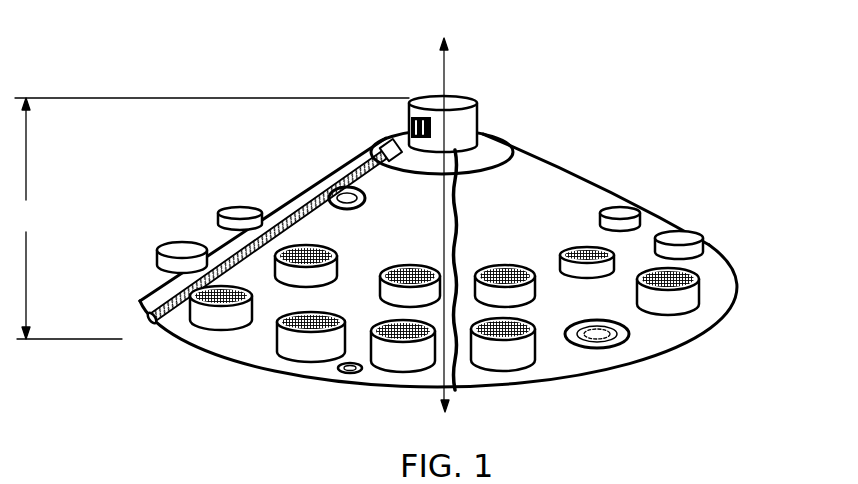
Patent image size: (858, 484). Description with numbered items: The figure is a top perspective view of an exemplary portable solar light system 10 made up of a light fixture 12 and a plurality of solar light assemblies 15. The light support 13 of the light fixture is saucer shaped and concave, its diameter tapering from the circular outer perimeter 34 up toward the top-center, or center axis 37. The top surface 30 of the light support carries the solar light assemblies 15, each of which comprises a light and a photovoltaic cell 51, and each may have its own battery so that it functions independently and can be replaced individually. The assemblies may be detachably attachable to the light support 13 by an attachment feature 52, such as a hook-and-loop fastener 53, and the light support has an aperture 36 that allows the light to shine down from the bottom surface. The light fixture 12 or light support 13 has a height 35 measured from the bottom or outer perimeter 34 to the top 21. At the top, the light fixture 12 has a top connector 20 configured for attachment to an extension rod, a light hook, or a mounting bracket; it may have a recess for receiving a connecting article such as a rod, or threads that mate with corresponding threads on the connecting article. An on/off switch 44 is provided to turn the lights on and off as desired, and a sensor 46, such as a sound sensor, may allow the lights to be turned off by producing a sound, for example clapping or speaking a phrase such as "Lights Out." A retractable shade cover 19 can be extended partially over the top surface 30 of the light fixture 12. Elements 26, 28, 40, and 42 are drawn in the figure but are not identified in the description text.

The portable solar light system 10 is at (340, 84).
The light fixture 12 is at (532, 193).
The light support 13 is at (563, 203).
The solar light assemblies 15 is at (679, 306).
The retractable shade cover 19 is at (290, 210).
The top connector 20 is at (479, 101).
The top 21 is at (412, 96).
The stem 26 is at (477, 170).
The drain hole 28 is at (350, 372).
The top surface 30 is at (643, 233).
The outer perimeter 34 is at (722, 260).
The height 35 is at (212, 218).
The aperture 36 is at (602, 338).
The center axis 37 is at (447, 67).
The small nozzle 40 is at (587, 233).
The nozzle 42 is at (213, 247).
The on/off switch 44 is at (411, 120).
The sensor 46 is at (388, 147).
The photovoltaic cell 51 is at (287, 347).
The attachment feature 52 is at (627, 335).
The hook-and-loop fastener 53 is at (605, 333).